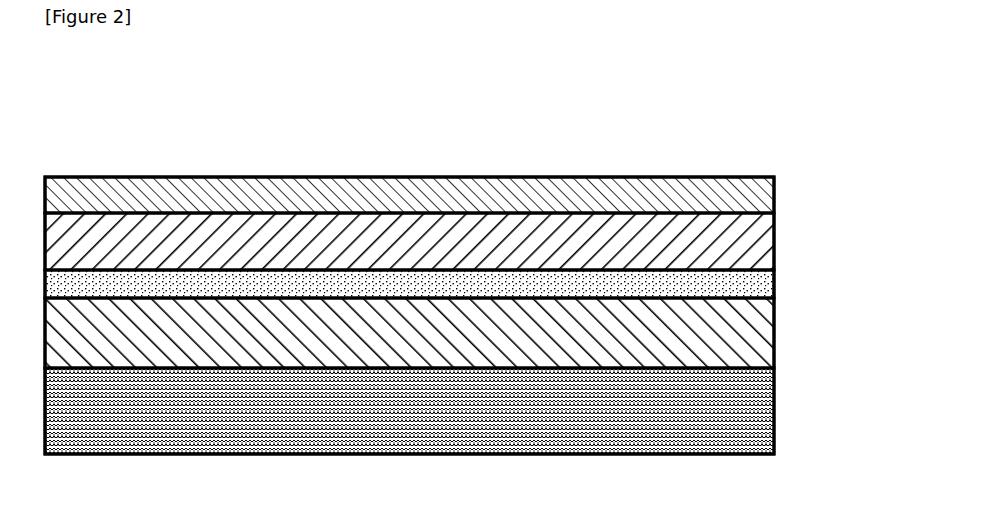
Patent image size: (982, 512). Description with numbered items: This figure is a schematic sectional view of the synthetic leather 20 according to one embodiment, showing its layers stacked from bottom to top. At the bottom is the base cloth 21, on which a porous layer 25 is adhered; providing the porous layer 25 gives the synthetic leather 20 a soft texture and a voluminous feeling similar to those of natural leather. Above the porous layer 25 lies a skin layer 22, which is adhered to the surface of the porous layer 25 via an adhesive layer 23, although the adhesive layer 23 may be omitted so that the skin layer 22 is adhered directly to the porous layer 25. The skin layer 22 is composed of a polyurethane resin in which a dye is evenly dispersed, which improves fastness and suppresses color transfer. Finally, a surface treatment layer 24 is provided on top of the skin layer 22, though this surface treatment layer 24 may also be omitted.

The synthetic leather 20 is at (702, 140).
The base cloth 21 is at (774, 397).
The skin layer 22 is at (774, 235).
The adhesive layer 23 is at (774, 277).
The surface treatment layer 24 is at (774, 196).
The porous layer 25 is at (774, 333).